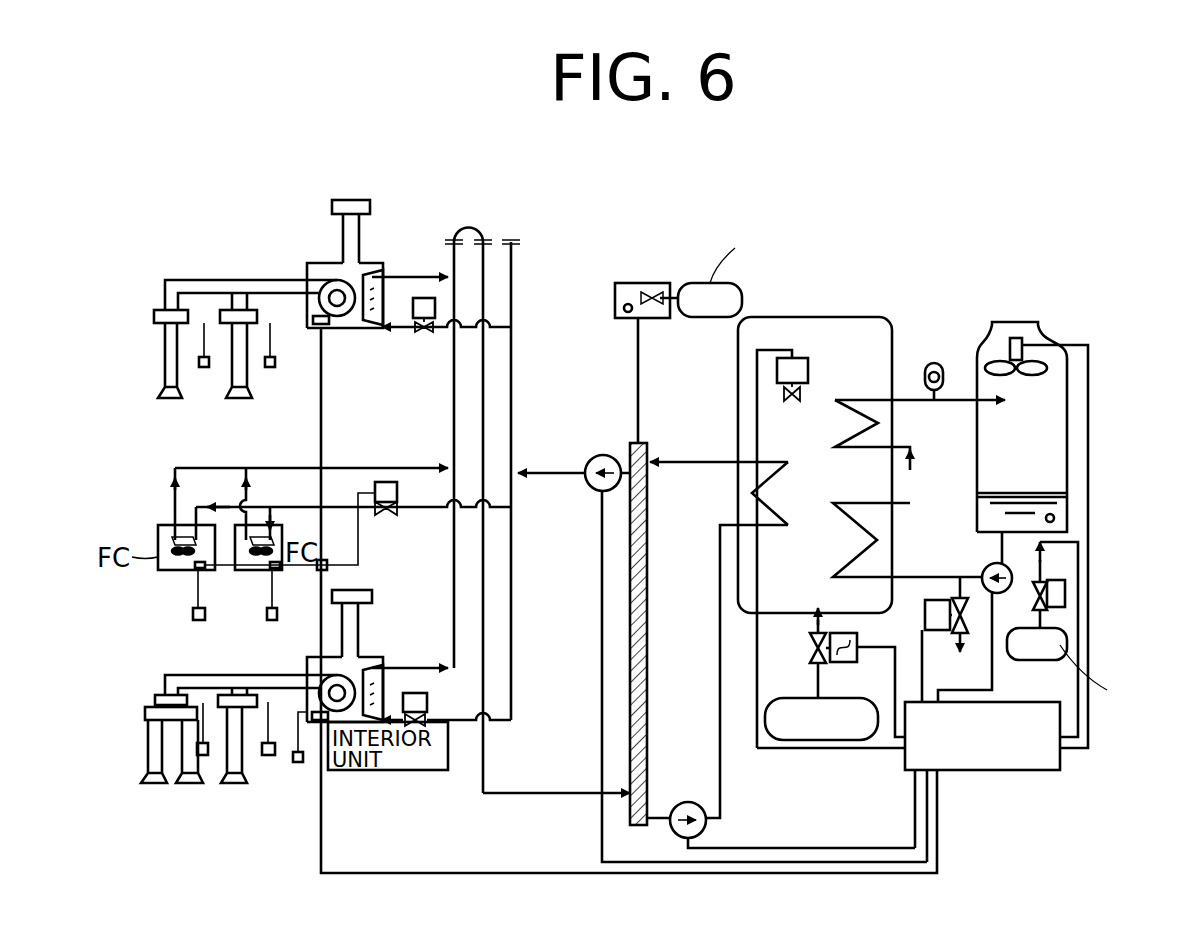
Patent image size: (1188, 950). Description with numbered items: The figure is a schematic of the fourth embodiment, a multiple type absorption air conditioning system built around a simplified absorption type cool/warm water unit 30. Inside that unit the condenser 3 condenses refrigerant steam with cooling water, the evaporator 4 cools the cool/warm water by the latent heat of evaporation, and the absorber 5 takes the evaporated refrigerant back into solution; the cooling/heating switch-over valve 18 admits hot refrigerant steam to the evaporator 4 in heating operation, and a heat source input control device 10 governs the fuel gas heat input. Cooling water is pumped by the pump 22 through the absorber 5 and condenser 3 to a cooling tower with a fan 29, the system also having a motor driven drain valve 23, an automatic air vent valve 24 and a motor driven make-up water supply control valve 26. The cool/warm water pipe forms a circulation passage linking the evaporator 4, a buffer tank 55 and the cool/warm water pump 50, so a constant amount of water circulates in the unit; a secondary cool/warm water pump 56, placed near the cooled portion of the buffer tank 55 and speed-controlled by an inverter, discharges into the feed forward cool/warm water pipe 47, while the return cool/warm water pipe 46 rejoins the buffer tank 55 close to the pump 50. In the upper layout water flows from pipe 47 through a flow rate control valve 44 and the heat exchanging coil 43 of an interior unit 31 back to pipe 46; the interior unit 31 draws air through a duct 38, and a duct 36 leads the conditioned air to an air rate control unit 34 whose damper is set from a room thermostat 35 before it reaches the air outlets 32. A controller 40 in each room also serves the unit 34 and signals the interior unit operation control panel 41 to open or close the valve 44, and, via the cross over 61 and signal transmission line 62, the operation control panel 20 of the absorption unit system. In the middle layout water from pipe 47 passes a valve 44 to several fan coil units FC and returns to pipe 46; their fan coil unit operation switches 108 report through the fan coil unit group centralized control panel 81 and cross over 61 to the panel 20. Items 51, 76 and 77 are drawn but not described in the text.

The condenser 3 is at (868, 400).
The evaporator 4 is at (788, 462).
The absorber 5 is at (840, 503).
The heat source input control device 10 is at (850, 662).
The cooling/heating switch-over valve 18 is at (808, 370).
The operation control panel 20 is at (990, 770).
The pump 22 is at (1005, 590).
The motor driven drain valve 23 is at (935, 630).
The automatic air vent valve 24 is at (934, 363).
The motor driven make-up water supply control valve 26 is at (1065, 593).
The fan 29 is at (1003, 350).
The absorption type cool/warm water unit 30 is at (773, 313).
The interior unit 31 is at (389, 479).
The air outlet 32 is at (165, 398).
The air rate control unit (VAV unit) 34 is at (223, 312).
The room thermostat 35 is at (235, 785).
The duct 36 is at (223, 280).
The duct 38 is at (343, 240).
The controller 40 is at (204, 367).
The interior unit operation control panel 41 is at (343, 330).
The heat exchanging coil 43 is at (372, 328).
The flow rate control valve 44 is at (423, 297).
The return cool/warm water pipe 46 is at (483, 780).
The feed forward cool/warm water pipe 47 is at (535, 473).
The cool/warm water pump 50 is at (688, 802).
The water supply device 51 is at (638, 283).
The buffer tank 55 is at (647, 505).
The secondary cool/warm water pump 56 is at (603, 455).
The cross over 61 is at (323, 420).
The signal transmission line 62 is at (445, 873).
The air outlet grille 76 is at (350, 200).
The motor valve 77 is at (385, 272).
The fan coil unit group centralized control panel 81 is at (327, 565).
The fan coil unit operation switch 108 is at (193, 614).